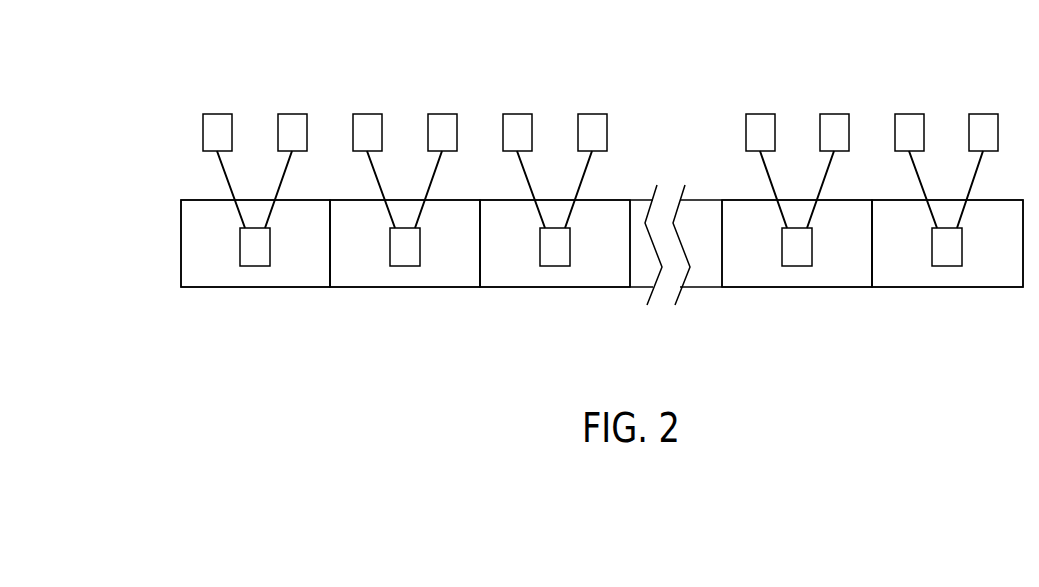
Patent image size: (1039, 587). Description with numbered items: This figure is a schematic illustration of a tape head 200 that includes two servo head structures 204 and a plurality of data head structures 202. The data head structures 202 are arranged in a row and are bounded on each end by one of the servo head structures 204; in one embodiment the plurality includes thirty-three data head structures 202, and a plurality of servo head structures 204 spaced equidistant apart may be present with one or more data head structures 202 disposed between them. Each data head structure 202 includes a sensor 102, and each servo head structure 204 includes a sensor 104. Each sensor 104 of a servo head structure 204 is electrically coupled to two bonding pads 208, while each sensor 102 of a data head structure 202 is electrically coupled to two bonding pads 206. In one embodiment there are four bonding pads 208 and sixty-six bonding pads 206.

The tape head 200 is at (137, 217).
The data head structure 202 is at (402, 287).
The servo head structure 204 is at (252, 287).
The sensor 102 is at (397, 248).
The sensor 104 is at (247, 248).
The bonding pad 206 is at (373, 114).
The bonding pad 208 is at (213, 114).